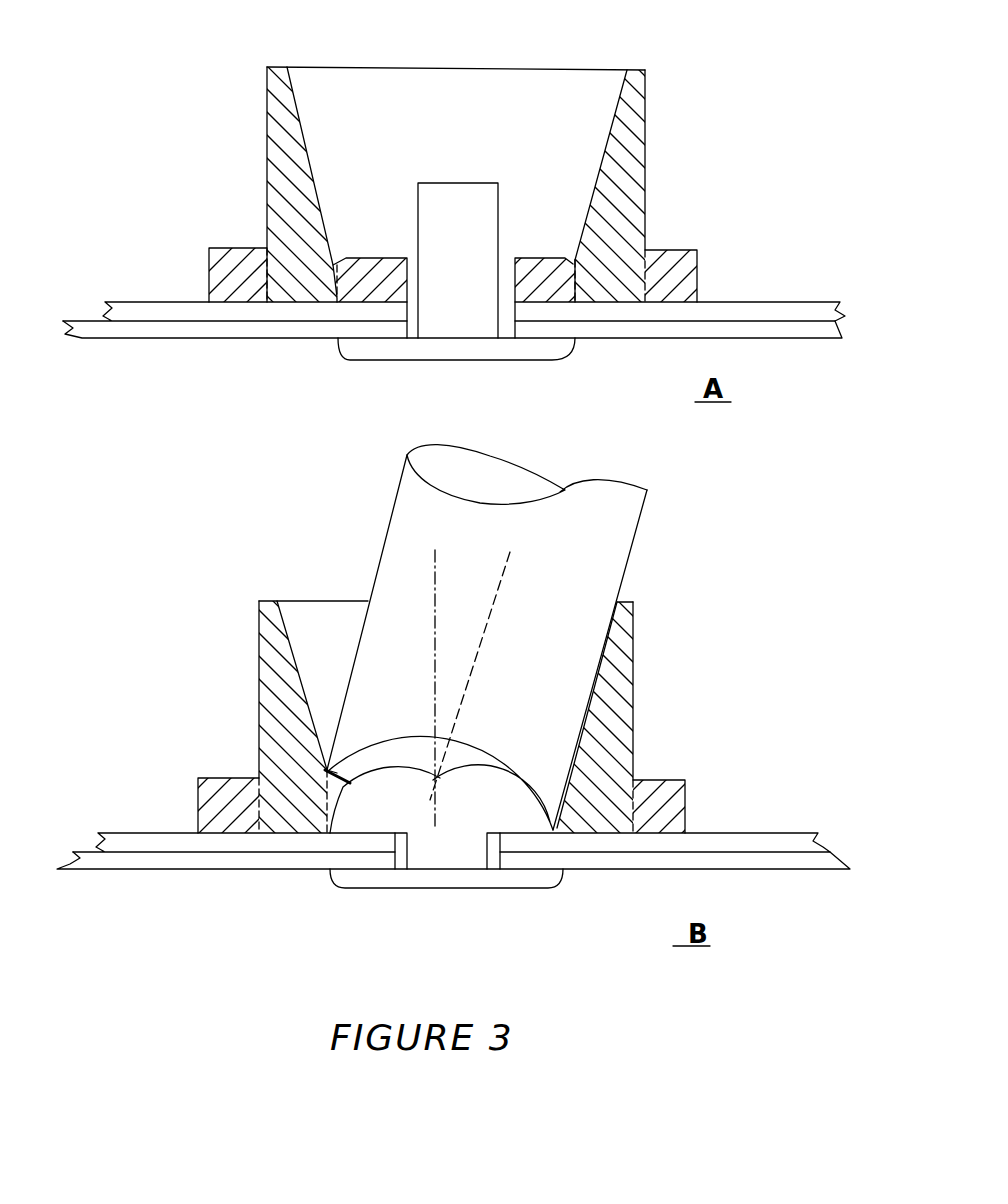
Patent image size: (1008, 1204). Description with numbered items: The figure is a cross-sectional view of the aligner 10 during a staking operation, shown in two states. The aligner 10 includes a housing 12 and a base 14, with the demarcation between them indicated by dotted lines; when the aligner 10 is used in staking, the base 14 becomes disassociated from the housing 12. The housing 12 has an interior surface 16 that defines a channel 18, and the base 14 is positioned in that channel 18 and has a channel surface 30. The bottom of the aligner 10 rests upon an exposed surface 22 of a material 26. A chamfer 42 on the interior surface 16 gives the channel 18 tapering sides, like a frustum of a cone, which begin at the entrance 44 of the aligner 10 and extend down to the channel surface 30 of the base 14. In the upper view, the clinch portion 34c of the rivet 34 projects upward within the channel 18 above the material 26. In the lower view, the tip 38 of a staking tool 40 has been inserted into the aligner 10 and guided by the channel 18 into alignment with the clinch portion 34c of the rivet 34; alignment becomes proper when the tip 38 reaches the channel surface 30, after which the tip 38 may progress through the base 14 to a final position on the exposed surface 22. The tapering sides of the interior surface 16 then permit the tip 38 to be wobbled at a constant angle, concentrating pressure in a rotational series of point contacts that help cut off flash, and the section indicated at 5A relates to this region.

The aligner 10 is at (504, 436).
The housing 12 is at (635, 152).
The base 14 is at (552, 288).
The interior surface 16 is at (313, 158).
The channel 18 is at (528, 82).
The exposed surface 22 is at (738, 310).
The material 26 is at (800, 317).
The channel surface 30 is at (525, 252).
The rivet 34 is at (452, 562).
The clinch portion 34c is at (475, 198).
The tip 38 is at (443, 753).
The staking tool 40 is at (610, 548).
The chamfer 42 is at (305, 113).
The entrance 44 is at (408, 66).
The section line 5A is at (373, 813).